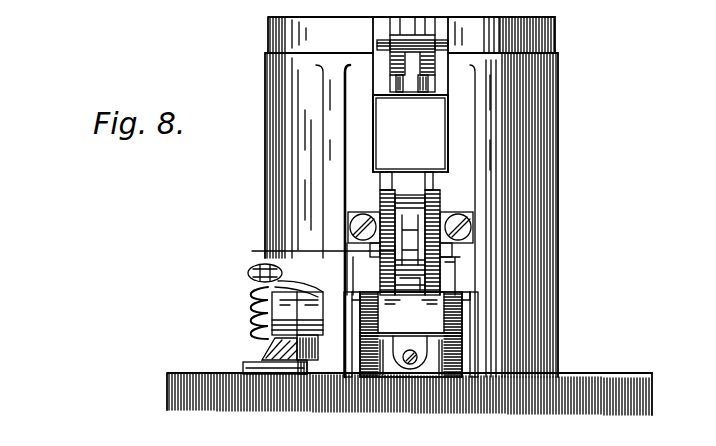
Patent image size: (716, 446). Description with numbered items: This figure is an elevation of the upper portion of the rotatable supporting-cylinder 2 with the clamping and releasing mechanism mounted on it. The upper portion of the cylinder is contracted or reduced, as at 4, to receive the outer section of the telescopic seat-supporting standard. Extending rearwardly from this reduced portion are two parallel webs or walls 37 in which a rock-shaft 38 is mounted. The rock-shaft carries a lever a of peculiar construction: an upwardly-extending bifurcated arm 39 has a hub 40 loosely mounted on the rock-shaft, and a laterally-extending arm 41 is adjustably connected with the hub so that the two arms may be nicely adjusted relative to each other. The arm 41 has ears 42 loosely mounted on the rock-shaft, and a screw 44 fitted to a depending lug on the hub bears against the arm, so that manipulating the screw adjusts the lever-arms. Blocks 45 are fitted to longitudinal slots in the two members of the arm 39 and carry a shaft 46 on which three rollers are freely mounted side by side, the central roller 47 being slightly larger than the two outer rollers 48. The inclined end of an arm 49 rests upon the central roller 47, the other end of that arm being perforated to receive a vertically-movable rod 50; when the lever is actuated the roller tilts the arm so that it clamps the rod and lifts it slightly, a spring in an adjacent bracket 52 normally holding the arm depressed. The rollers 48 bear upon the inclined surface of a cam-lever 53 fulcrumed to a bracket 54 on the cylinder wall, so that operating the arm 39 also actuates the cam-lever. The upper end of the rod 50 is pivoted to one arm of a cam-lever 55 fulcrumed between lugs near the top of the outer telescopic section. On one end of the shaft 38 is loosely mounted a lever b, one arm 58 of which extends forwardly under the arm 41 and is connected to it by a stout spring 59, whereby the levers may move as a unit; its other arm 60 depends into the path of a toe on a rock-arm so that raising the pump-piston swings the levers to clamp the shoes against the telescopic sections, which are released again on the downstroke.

The cylinder 2 is at (655, 395).
The reduced portion of the cylinder 4 is at (562, 117).
The parallel webs or walls 37 is at (333, 88).
The rock-shaft 38 is at (357, 340).
The bifurcated arm 39 is at (435, 280).
The hub 40 is at (411, 334).
The laterally-extending arm 41 is at (268, 292).
The ears 42 is at (370, 372).
The screw 44 is at (412, 366).
The blocks 45 is at (607, 259).
The shaft 46 is at (447, 250).
The central roller 47 is at (451, 233).
The rollers 48 is at (408, 250).
The arm 49 is at (407, 182).
The vertically-movable rod 50 is at (410, 133).
The bracket 52 is at (410, 133).
The cam-lever 53 is at (400, 283).
The bracket 54 is at (474, 220).
The cam-lever 55 is at (395, 52).
The arm 58 is at (262, 345).
The stout spring 59 is at (255, 316).
The arm 60 is at (302, 360).
The lever a is at (258, 275).
The lever b is at (260, 350).